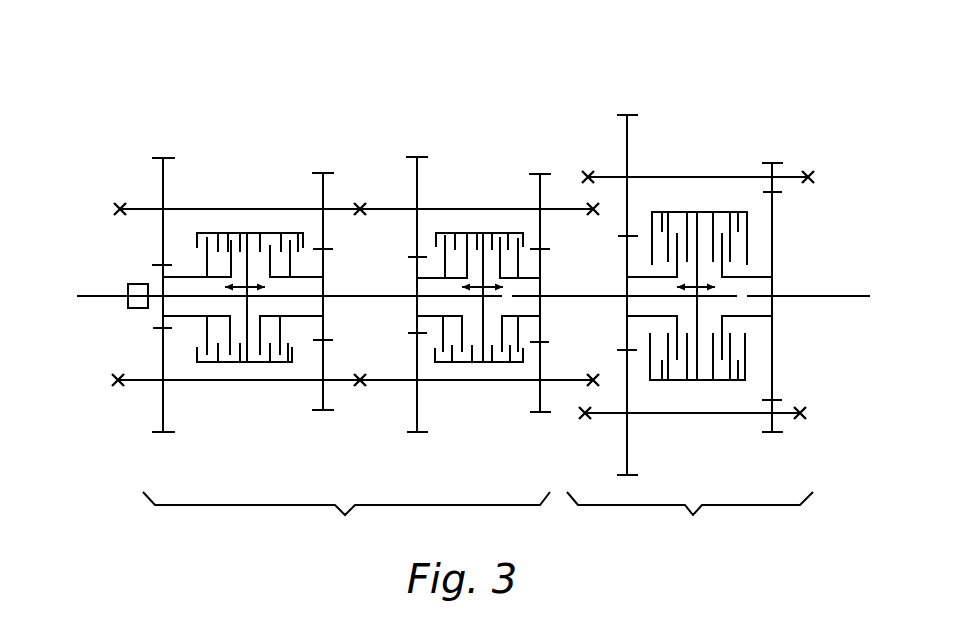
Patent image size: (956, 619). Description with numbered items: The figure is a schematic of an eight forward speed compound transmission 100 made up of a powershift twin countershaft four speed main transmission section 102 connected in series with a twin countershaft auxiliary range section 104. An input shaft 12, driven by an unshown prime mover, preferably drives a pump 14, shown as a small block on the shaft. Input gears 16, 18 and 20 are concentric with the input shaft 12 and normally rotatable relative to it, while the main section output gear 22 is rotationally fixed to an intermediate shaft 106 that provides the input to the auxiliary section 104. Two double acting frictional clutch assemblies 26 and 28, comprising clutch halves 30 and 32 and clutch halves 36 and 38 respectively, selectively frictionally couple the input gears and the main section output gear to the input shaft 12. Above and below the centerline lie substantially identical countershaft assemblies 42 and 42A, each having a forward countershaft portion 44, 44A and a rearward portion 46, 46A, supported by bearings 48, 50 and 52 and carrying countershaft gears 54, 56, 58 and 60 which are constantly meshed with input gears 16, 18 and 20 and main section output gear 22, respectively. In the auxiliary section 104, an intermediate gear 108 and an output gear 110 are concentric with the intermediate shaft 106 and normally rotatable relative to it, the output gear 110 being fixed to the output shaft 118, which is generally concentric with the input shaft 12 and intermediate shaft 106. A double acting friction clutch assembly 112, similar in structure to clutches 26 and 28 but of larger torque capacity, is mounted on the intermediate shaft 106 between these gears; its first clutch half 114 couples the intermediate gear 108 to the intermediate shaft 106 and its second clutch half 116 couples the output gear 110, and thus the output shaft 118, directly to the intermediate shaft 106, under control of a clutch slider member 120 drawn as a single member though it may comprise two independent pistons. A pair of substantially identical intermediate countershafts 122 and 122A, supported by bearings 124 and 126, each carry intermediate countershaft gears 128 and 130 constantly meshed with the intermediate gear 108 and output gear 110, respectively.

The compound transmission 100 is at (472, 244).
The main transmission section 102 is at (346, 521).
The auxiliary range section 104 is at (690, 521).
The input shaft 12 is at (92, 296).
The pump 14 is at (128, 306).
The input gear 16 is at (152, 265).
The input gear 18 is at (323, 262).
The input gear 20 is at (417, 270).
The main section output gear 22 is at (540, 270).
The double acting frictional clutch assembly 26 is at (247, 368).
The double acting frictional clutch assembly 28 is at (483, 368).
The clutch half 30 is at (213, 235).
The clutch half 32 is at (289, 237).
The clutch half 36 is at (445, 235).
The clutch half 38 is at (520, 237).
The countershaft assembly 42 is at (390, 204).
The countershaft assembly 42A is at (395, 385).
The forward countershaft portion 44 is at (187, 207).
The forward countershaft portion 44A is at (200, 381).
The rearward countershaft portion 46 is at (565, 207).
The rearward countershaft portion 46A is at (575, 383).
The bearing 48 is at (120, 205).
The bearing 50 is at (360, 205).
The bearing 52 is at (593, 215).
The countershaft gear 54 is at (163, 415).
The countershaft gear 56 is at (323, 397).
The countershaft gear 58 is at (418, 417).
The countershaft gear 60 is at (540, 397).
The intermediate shaft 106 is at (597, 296).
The intermediate gear 108 is at (627, 342).
The output gear 110 is at (772, 367).
The double acting friction clutch assembly 112 is at (698, 392).
The first clutch half 114 is at (662, 213).
The second clutch half 116 is at (740, 223).
The output shaft 118 is at (808, 296).
The clutch slider member 120 is at (700, 228).
The intermediate countershaft 122 is at (635, 175).
The intermediate countershaft 122A is at (657, 414).
The bearing 124 is at (589, 176).
The bearing 126 is at (808, 177).
The intermediate countershaft gear 128 is at (630, 125).
The intermediate countershaft gear 130 is at (778, 167).